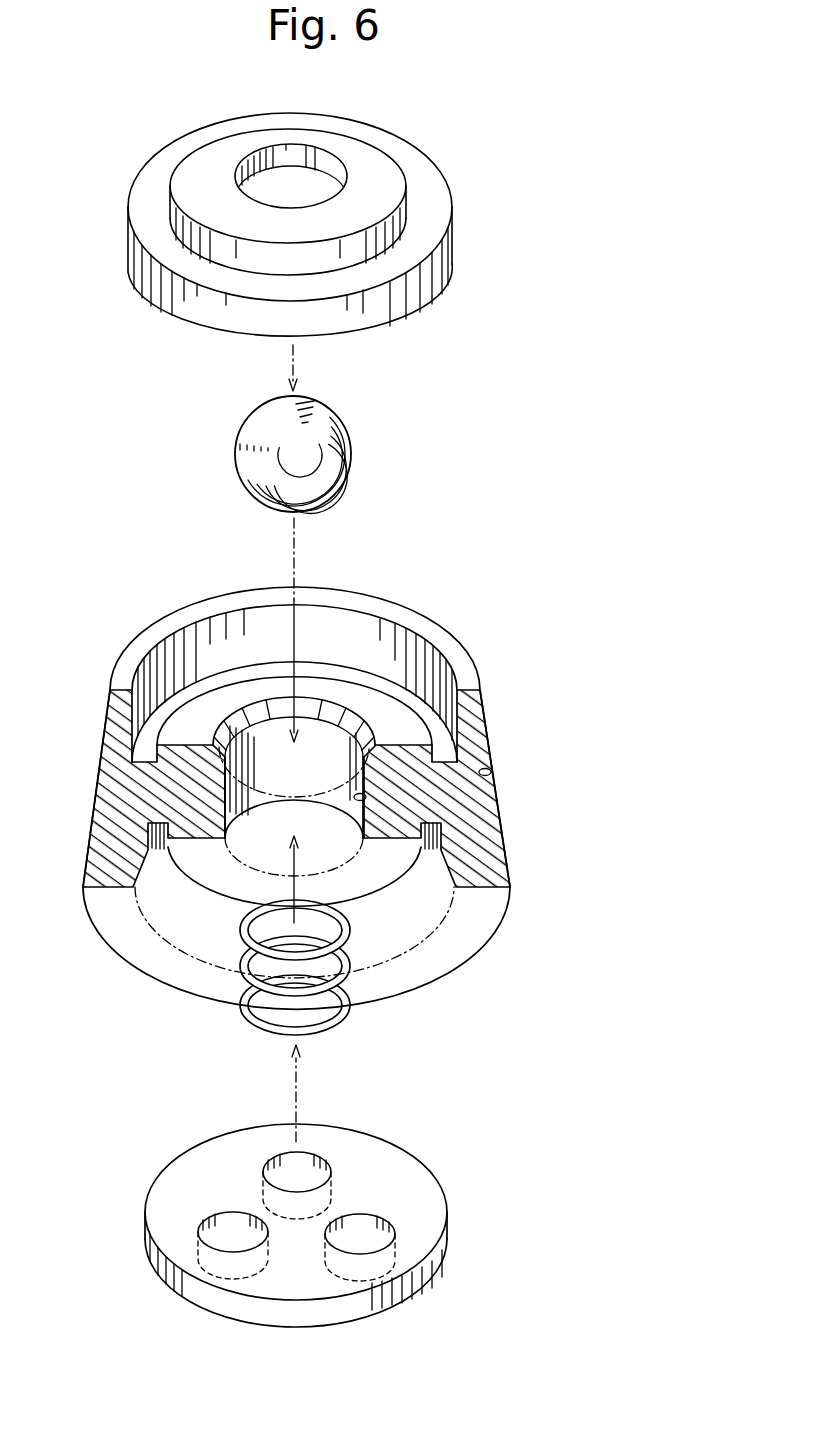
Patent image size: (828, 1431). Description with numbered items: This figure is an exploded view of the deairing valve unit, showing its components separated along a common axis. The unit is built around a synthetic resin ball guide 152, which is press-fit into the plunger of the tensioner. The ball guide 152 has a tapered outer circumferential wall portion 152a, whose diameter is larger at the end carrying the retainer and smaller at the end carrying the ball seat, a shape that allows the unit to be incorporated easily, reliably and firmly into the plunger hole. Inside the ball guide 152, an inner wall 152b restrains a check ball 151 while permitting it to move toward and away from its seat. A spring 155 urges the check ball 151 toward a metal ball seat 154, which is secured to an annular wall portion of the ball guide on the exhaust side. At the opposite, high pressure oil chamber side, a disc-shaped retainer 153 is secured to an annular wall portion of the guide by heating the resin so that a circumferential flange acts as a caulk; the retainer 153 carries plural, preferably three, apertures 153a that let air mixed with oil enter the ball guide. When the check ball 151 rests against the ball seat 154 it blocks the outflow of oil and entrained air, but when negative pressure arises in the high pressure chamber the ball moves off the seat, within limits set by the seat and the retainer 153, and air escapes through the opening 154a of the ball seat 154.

The check ball 151 is at (352, 455).
The ball guide 152 is at (630, 732).
The tapered outer circumferential wall portion 152a is at (491, 771).
The inner wall 152b is at (366, 797).
The retainer 153 is at (417, 1182).
The apertures 153a is at (303, 1162).
The ball seat 154 is at (415, 247).
The opening 154a is at (313, 158).
The spring 155 is at (350, 1017).